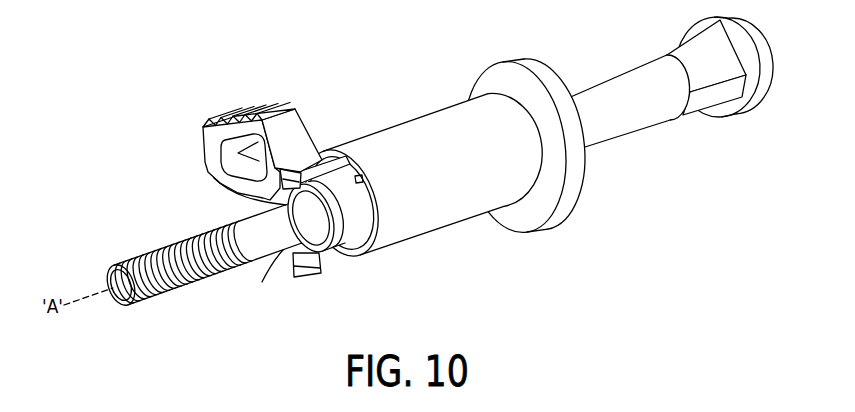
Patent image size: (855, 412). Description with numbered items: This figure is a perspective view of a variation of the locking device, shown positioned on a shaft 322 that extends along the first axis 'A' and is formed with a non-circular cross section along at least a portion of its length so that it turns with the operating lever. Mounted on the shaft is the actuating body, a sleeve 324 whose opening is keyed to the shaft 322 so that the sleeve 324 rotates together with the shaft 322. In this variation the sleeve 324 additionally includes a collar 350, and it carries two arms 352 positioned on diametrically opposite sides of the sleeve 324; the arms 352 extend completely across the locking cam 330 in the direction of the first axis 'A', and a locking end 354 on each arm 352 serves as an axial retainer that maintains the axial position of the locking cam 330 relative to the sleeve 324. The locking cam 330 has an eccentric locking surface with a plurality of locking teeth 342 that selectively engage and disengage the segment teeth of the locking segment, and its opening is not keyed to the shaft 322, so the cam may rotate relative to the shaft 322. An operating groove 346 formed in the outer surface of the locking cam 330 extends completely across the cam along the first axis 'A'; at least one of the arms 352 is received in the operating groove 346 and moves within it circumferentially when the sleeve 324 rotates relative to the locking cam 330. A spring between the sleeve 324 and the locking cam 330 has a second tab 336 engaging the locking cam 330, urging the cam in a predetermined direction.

The shaft 322 is at (627, 89).
The sleeve 324 is at (395, 141).
The locking cam 330 is at (299, 140).
The second tab 336 is at (368, 189).
The locking teeth 342 is at (246, 112).
The operating groove 346 is at (287, 248).
The collar 350 is at (560, 212).
The arms 352 is at (278, 172).
The locking end 354 is at (258, 199).